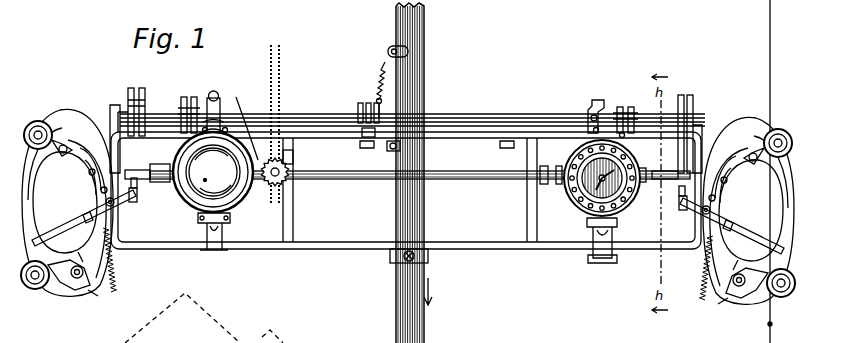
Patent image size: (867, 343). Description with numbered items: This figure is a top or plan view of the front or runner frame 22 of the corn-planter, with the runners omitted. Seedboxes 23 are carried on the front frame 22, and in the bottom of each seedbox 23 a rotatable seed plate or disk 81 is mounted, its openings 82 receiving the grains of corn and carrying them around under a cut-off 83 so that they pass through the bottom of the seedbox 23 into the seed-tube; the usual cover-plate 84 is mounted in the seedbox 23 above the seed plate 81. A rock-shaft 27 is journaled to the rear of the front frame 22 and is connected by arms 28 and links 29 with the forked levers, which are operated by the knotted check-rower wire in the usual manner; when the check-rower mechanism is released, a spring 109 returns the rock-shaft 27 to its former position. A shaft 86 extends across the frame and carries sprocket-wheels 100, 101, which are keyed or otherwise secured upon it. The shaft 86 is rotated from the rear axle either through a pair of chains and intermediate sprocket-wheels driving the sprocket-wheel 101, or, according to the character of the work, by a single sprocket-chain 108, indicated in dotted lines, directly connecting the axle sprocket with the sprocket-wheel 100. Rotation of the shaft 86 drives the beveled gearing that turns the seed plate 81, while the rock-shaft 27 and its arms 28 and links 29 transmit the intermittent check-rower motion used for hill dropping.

The front or runner frame 22 is at (292, 215).
The seedbox 23 is at (213, 172).
The rock-shaft 27 is at (518, 109).
The arm 28 is at (146, 106).
The link 29 is at (126, 112).
The seed plate or disk 81 is at (576, 198).
The openings 82 is at (620, 206).
The cut-off 83 is at (593, 152).
The cover-plate 84 is at (592, 170).
The shaft 86 is at (357, 179).
The sprocket-wheel 100 is at (288, 157).
The sprocket-wheel 101 is at (241, 120).
The sprocket-chain 108 is at (283, 125).
The spring 109 is at (385, 62).